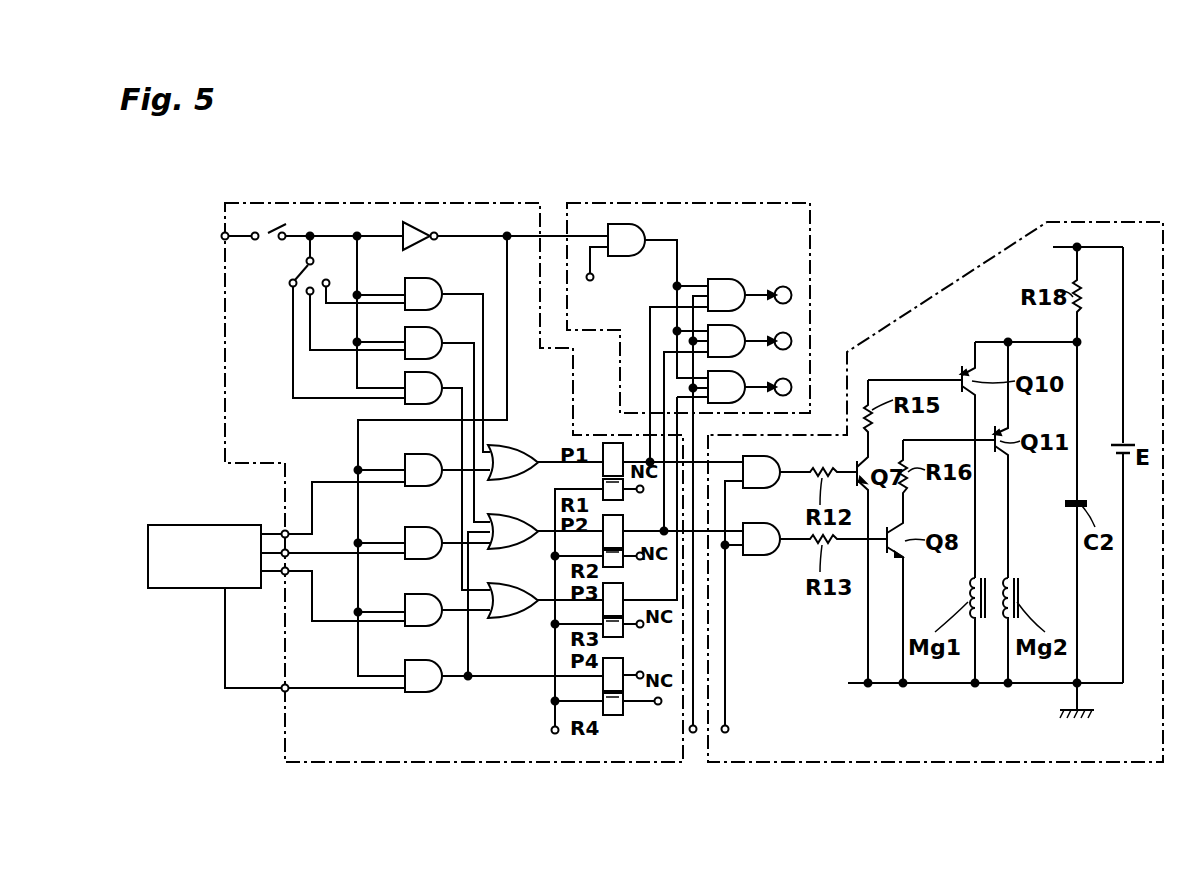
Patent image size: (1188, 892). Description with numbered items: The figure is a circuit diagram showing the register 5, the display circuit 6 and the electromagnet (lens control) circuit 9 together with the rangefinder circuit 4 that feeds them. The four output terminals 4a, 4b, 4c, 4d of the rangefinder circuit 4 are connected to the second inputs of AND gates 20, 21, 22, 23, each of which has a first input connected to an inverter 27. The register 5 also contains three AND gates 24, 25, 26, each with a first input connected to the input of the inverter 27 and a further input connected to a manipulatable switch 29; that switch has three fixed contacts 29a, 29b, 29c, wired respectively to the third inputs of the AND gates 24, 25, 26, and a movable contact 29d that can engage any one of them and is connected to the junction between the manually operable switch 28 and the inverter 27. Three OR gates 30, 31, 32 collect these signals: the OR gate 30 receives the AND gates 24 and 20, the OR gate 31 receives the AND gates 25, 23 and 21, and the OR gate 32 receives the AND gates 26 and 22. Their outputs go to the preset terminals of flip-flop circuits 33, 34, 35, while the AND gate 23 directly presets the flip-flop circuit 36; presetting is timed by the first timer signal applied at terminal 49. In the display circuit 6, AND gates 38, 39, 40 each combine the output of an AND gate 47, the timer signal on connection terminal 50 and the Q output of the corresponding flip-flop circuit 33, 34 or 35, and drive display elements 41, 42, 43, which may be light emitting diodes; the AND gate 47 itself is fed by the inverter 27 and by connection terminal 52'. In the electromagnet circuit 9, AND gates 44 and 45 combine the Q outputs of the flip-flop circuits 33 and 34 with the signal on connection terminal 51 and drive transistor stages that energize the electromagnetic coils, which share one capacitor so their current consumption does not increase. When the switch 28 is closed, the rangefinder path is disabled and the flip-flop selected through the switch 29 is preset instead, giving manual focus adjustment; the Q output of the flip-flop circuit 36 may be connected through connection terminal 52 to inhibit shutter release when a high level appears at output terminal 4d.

The rangefinder circuit 4 is at (192, 525).
The output terminal of rangefinder circuit 4a is at (285, 530).
The output terminal of rangefinder circuit 4b is at (289, 555).
The output terminal of rangefinder circuit 4c is at (287, 575).
The output terminal of rangefinder circuit 4d is at (283, 692).
The register 5 is at (467, 762).
The display circuit 6 is at (812, 203).
The electromagnet circuit 9 is at (1095, 222).
The AND gate 20 is at (436, 487).
The AND gate 21 is at (436, 559).
The AND gate 22 is at (436, 626).
The AND gate 23 is at (436, 692).
The AND gate 24 is at (441, 304).
The AND gate 25 is at (440, 353).
The AND gate 26 is at (440, 401).
The inverter 27 is at (420, 226).
The manually operable switch 28 is at (268, 232).
The manipulatable switch 29 is at (290, 278).
The fixed contact 29a is at (326, 279).
The fixed contact 29b is at (309, 295).
The fixed contact 29c is at (292, 287).
The movable contact 29d is at (306, 263).
The OR gate 30 is at (522, 473).
The OR gate 31 is at (522, 545).
The OR gate 32 is at (522, 616).
The flip-flop circuit 33 is at (612, 443).
The flip-flop circuit 34 is at (634, 505).
The flip-flop circuit 35 is at (615, 584).
The flip-flop circuit 36 is at (615, 658).
The AND gate 38 is at (728, 279).
The AND gate 39 is at (738, 326).
The AND gate 40 is at (738, 372).
The display element 41 is at (790, 289).
The display element 42 is at (790, 335).
The display element 43 is at (790, 381).
The AND gate 44 is at (772, 458).
The AND gate 45 is at (760, 556).
The AND gate 47 is at (632, 224).
The terminal 49 is at (557, 735).
The connection terminal 50 is at (694, 734).
The connection terminal 51 is at (727, 732).
The connection terminal 52 is at (649, 719).
The connection terminal 52' is at (616, 282).